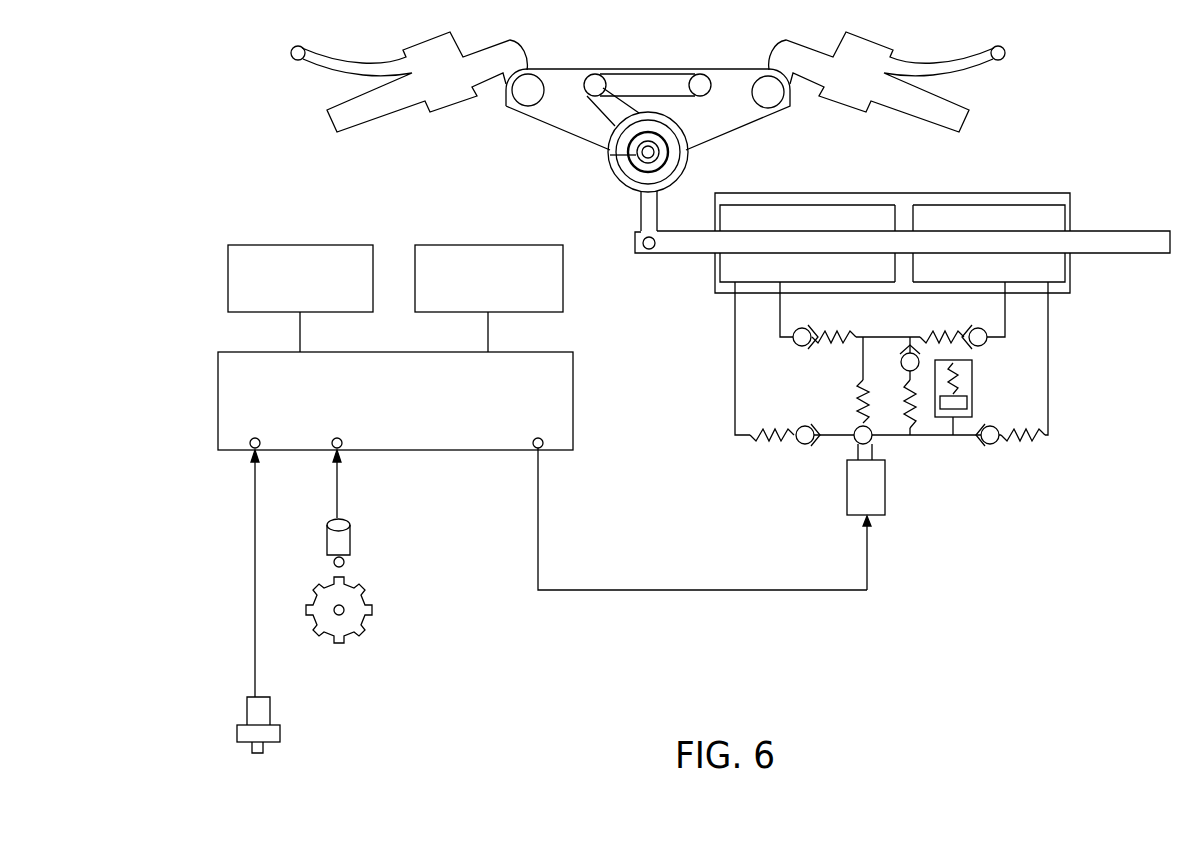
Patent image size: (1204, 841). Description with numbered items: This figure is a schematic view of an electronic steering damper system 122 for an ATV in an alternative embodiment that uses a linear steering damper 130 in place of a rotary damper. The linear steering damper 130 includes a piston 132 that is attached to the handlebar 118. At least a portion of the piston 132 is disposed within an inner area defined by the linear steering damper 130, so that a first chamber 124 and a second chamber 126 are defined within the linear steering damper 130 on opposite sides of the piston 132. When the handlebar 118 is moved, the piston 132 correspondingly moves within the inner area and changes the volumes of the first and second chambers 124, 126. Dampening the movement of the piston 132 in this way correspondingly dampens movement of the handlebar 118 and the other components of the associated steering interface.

The handlebar 118 is at (372, 112).
The electronic steering damper system 122 is at (196, 186).
The first chamber 124 is at (811, 216).
The second chamber 126 is at (983, 217).
The linear steering damper 130 is at (1080, 135).
The piston 132 is at (908, 264).